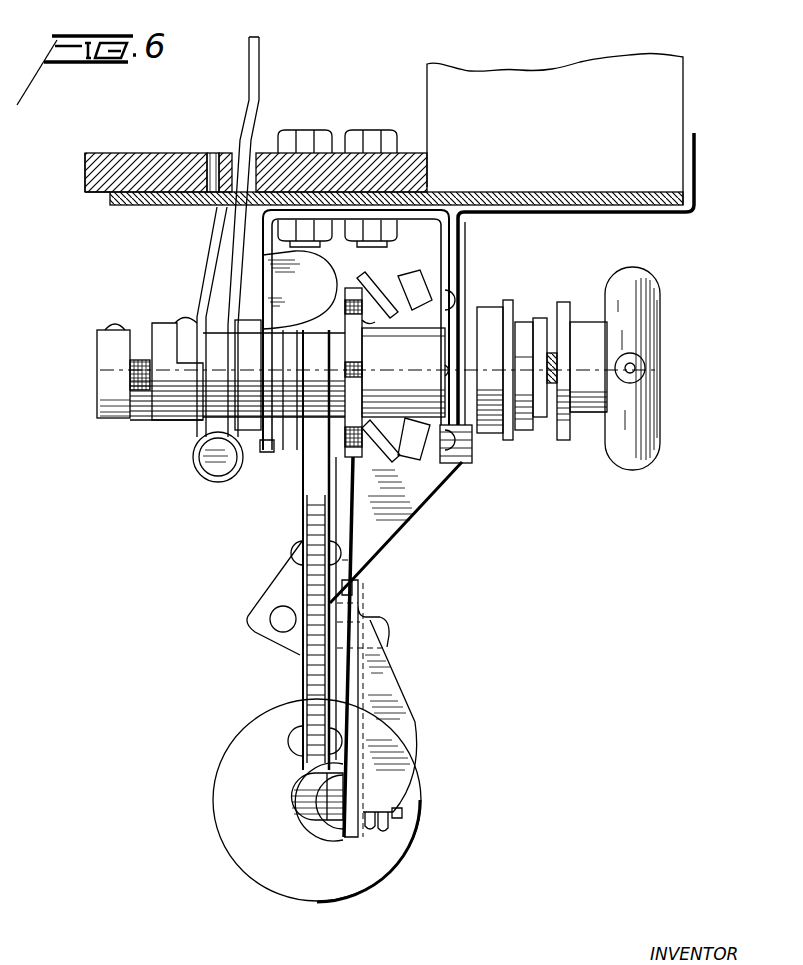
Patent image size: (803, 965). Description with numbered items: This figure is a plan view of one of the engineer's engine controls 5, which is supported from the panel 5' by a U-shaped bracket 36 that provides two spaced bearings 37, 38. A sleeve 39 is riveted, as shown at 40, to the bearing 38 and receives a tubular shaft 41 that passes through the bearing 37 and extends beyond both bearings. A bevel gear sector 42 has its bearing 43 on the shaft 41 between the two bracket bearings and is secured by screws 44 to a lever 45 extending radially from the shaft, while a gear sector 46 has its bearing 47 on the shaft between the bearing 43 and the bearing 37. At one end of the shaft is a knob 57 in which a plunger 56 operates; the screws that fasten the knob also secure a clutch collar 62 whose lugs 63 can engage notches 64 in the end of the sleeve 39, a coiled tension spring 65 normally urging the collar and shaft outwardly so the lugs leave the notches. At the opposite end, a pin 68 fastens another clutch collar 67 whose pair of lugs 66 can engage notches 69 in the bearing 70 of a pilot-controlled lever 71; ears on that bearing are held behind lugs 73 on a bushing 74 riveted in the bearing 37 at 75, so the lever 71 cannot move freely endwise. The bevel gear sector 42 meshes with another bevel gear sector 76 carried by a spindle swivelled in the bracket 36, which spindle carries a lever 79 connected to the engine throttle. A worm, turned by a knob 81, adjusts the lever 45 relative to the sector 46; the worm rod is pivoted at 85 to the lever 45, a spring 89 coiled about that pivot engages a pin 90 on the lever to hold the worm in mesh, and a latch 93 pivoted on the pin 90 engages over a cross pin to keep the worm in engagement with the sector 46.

The panel 5' is at (405, 129).
The control 5 is at (484, 531).
The bracket 36 is at (468, 247).
The bearing 37 is at (275, 450).
The bearing 38 is at (467, 463).
The sleeve 39 is at (490, 313).
The rivet 40 is at (445, 370).
The tubular shaft 41 is at (120, 415).
The bevel gear sector 42 is at (370, 290).
The bearing 43 is at (362, 395).
The screw 44 is at (362, 357).
The lever 45 is at (347, 537).
The gear sector 46 is at (307, 688).
The bearing 47 is at (215, 435).
The plunger 56 is at (645, 367).
The knob 57 is at (650, 282).
The clutch collar 62 is at (587, 405).
The lug 63 is at (553, 352).
The notch 64 is at (527, 350).
The coiled tension spring 65 is at (548, 355).
The lug 66 is at (143, 365).
The clutch collar 67 is at (108, 383).
The pin 68 is at (118, 328).
The notch 69 is at (167, 363).
The bearing 70 is at (175, 418).
The lever 71 is at (258, 83).
The lug 73 is at (250, 353).
The bushing 74 is at (275, 345).
The rivet 75 is at (285, 440).
The bevel gear sector 76 is at (405, 460).
The lever 79 is at (270, 587).
The knob 81 is at (337, 880).
The pivot pin 85 is at (402, 812).
The spring 89 is at (385, 830).
The pin 90 is at (388, 628).
The latch 93 is at (388, 678).